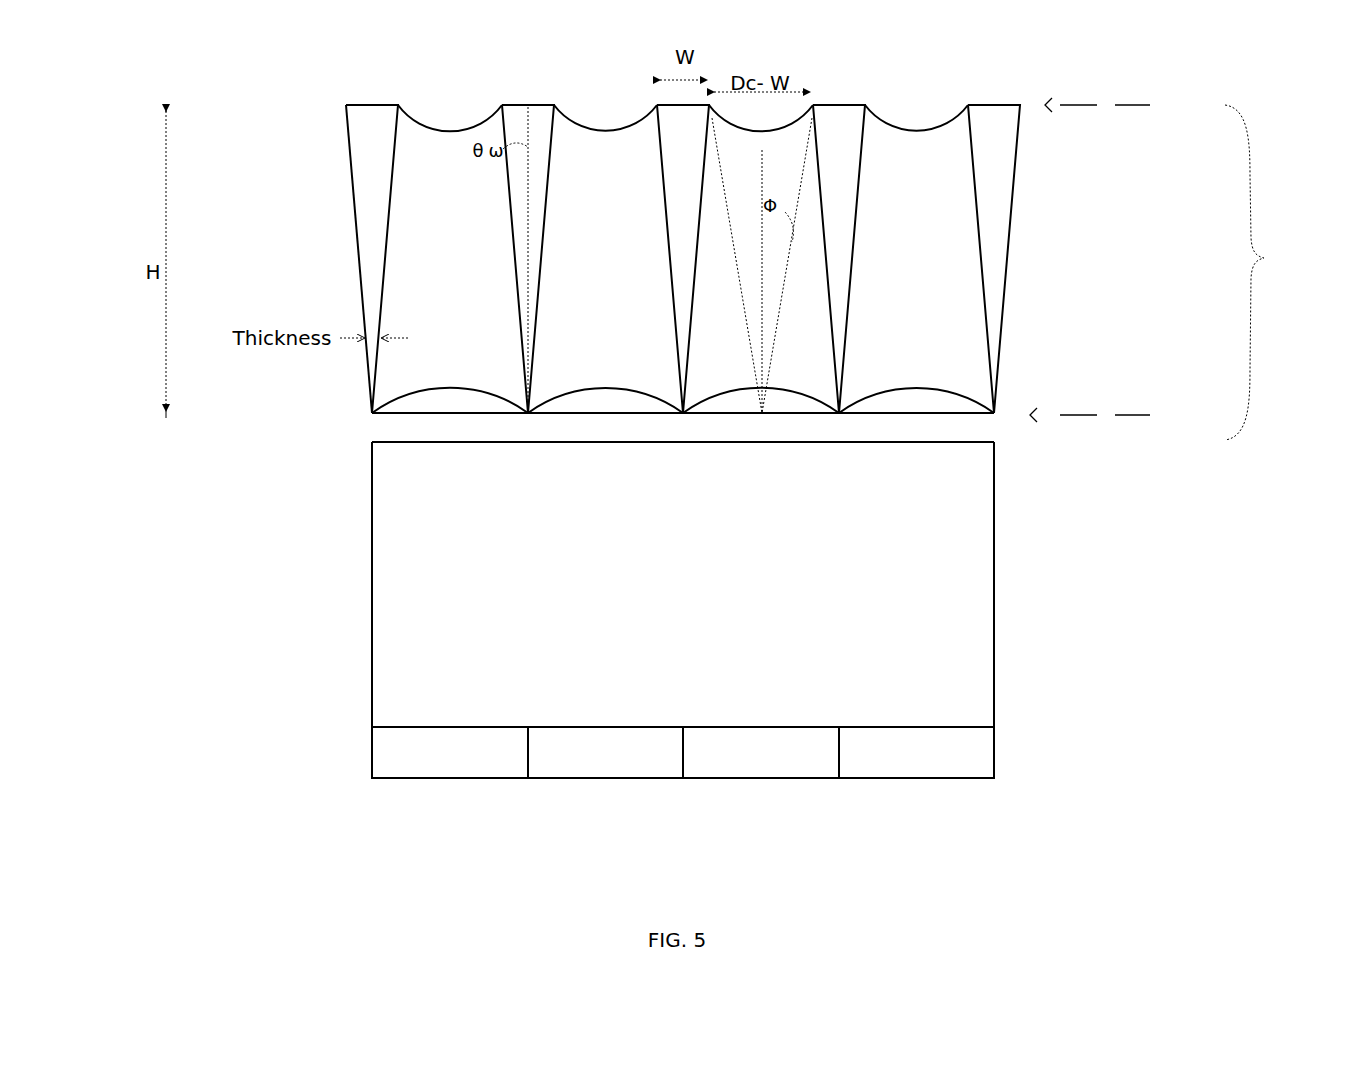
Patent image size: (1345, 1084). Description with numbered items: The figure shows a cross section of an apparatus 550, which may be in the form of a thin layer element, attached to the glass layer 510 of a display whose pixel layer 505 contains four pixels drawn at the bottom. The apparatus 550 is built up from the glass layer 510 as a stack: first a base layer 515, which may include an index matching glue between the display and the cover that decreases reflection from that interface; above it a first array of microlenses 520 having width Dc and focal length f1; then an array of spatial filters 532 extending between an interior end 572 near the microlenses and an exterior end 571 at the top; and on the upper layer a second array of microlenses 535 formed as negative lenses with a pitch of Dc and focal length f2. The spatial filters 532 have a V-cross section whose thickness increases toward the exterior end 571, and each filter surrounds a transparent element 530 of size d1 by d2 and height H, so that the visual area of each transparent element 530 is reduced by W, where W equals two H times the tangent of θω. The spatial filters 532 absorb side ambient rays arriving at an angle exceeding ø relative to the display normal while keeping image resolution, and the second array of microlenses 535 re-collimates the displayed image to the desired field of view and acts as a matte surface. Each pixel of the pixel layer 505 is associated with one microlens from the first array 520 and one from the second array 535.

The pixel layer 505 is at (683, 774).
The glass layer 510 is at (683, 584).
The base layer 515 is at (683, 427).
The first array of microlenses 520 is at (595, 366).
The transparent element 530 is at (615, 256).
The array of spatial filters 532 is at (348, 170).
The second array of microlenses 535 is at (611, 79).
The apparatus 550 is at (1273, 272).
The exterior end 571 is at (1120, 104).
The interior end 572 is at (1113, 409).